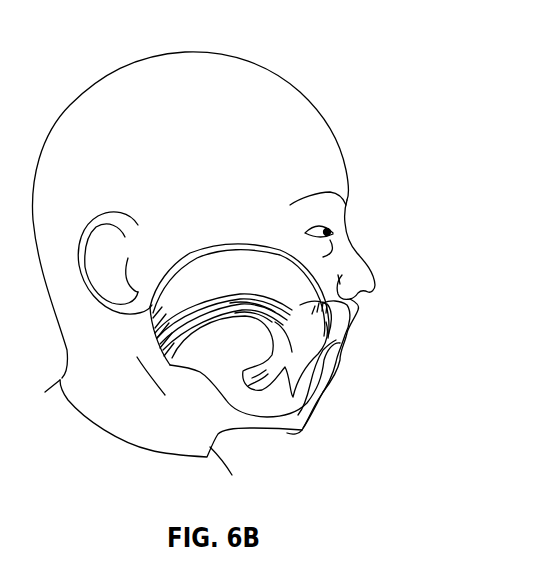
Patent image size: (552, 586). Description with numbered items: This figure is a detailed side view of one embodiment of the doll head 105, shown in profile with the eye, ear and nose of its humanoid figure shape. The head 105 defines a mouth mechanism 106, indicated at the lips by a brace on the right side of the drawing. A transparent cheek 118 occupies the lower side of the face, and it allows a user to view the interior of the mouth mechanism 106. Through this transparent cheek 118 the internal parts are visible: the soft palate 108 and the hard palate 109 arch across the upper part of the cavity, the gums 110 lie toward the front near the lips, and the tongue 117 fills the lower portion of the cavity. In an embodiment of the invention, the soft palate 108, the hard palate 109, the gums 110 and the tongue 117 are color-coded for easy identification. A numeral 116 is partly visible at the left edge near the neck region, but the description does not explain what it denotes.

The head 105 is at (87, 55).
The mouth mechanism 106 is at (370, 310).
The soft palate 108 is at (197, 287).
The hard palate 109 is at (247, 277).
The gums 110 is at (315, 305).
The neck 116 is at (30, 372).
The tongue 117 is at (260, 353).
The transparent cheek 118 is at (207, 350).